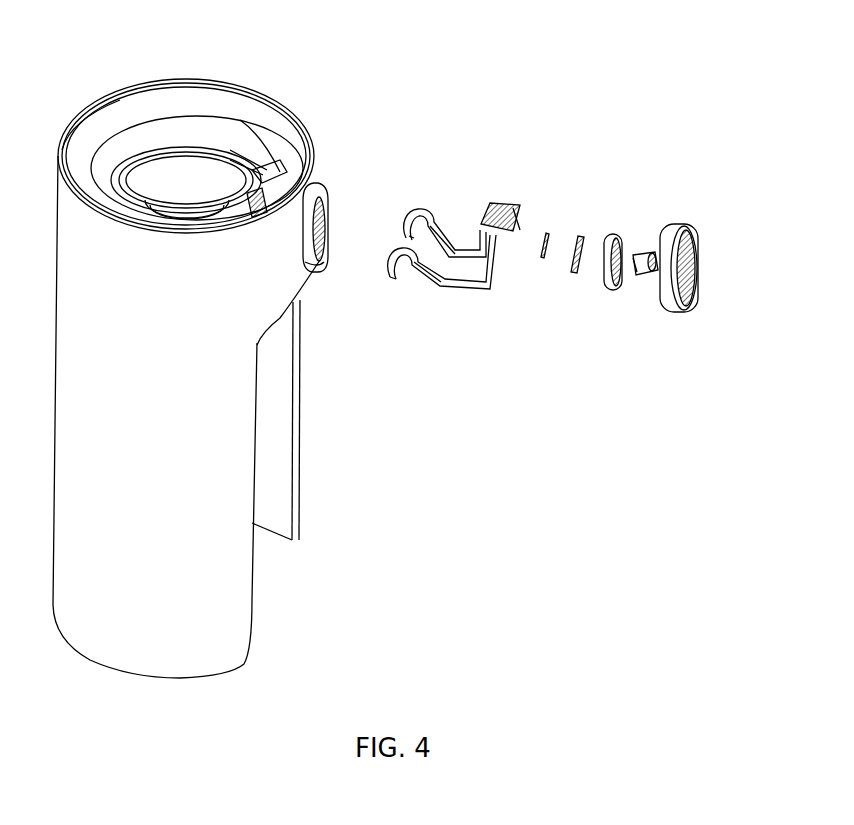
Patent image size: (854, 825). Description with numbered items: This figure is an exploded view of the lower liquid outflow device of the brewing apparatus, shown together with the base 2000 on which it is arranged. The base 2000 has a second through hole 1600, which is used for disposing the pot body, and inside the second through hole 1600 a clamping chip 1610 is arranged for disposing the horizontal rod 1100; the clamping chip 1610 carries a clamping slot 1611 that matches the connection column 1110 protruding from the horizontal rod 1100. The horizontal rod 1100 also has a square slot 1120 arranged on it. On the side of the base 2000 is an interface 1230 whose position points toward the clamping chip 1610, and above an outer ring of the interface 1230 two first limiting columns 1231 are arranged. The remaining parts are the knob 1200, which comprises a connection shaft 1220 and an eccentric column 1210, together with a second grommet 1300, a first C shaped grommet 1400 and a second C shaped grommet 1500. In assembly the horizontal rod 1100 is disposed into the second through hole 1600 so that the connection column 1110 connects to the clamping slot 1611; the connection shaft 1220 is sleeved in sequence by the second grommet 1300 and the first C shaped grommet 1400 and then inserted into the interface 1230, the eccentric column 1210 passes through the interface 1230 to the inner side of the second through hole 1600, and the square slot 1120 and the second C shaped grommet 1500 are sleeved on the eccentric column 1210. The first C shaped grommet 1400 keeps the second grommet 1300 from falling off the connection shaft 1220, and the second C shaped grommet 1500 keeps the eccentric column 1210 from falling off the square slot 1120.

The base 2000 is at (173, 532).
The second through hole 1600 is at (120, 168).
The clamping slot 1611 is at (263, 167).
The clamping chip 1610 is at (282, 170).
The first limiting columns 1231 is at (326, 195).
The interface 1230 is at (316, 268).
The connection column 1110 is at (495, 200).
The horizontal rod 1100 is at (503, 200).
The square slot 1120 is at (515, 215).
The second C shaped grommet 1500 is at (542, 253).
The first C shaped grommet 1400 is at (573, 262).
The second grommet 1300 is at (612, 234).
The knob 1200 is at (678, 224).
The connection shaft 1220 is at (645, 270).
The eccentric column 1210 is at (638, 266).